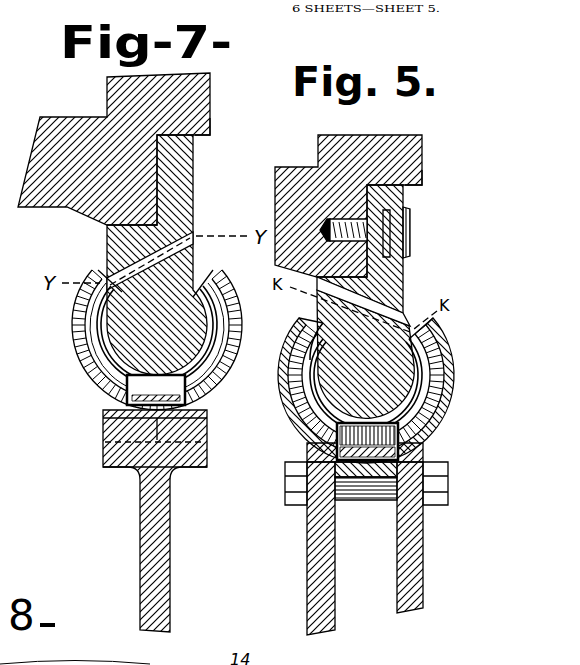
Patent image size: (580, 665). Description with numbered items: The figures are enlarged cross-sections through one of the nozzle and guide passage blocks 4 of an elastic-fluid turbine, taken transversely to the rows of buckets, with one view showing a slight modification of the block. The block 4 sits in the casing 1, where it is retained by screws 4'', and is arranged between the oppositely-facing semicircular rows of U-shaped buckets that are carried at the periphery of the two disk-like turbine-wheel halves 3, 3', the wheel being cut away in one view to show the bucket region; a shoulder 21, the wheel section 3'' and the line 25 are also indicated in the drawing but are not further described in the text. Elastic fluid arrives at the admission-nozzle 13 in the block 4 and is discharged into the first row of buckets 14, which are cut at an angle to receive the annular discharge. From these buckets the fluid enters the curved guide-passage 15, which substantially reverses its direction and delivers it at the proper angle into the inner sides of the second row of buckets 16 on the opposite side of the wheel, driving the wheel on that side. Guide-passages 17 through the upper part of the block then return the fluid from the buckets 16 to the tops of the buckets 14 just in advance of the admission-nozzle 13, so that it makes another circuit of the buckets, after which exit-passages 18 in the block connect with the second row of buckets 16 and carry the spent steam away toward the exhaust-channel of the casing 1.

In FIG. 7, the casing 1 is at (206, 84).
In FIG. 5, the casing 1 is at (423, 149).
In FIG. 7, the shoulder 21 is at (213, 133).
In FIG. 5, the shoulder 21 is at (423, 188).
In FIG. 7, the nozzle and guide passage block 4 is at (166, 255).
In FIG. 5, the nozzle and guide passage block 4 is at (380, 301).
In FIG. 5, the screws 4'' is at (427, 232).
In FIG. 7, the admission-nozzle 13 is at (190, 240).
In FIG. 5, the admission-nozzle 13 is at (405, 300).
In FIG. 7, the first row of buckets 14 is at (97, 316).
In FIG. 5, the first row of buckets 14 is at (300, 368).
In FIG. 7, the guide-passage 15 is at (145, 386).
In FIG. 5, the guide-passage 15 is at (337, 433).
In FIG. 7, the second row of buckets 16 is at (210, 372).
In FIG. 5, the second row of buckets 16 is at (421, 443).
In FIG. 5, the guide-passages 17 is at (420, 331).
In FIG. 5, the exit-passages 18 is at (322, 312).
In FIG. 7, the section line 25 is at (205, 442).
In FIG. 5, the turbine-wheel half 3 is at (309, 548).
In FIG. 5, the turbine-wheel half 3' is at (427, 537).
In FIG. 7, the shank 3'' is at (156, 549).